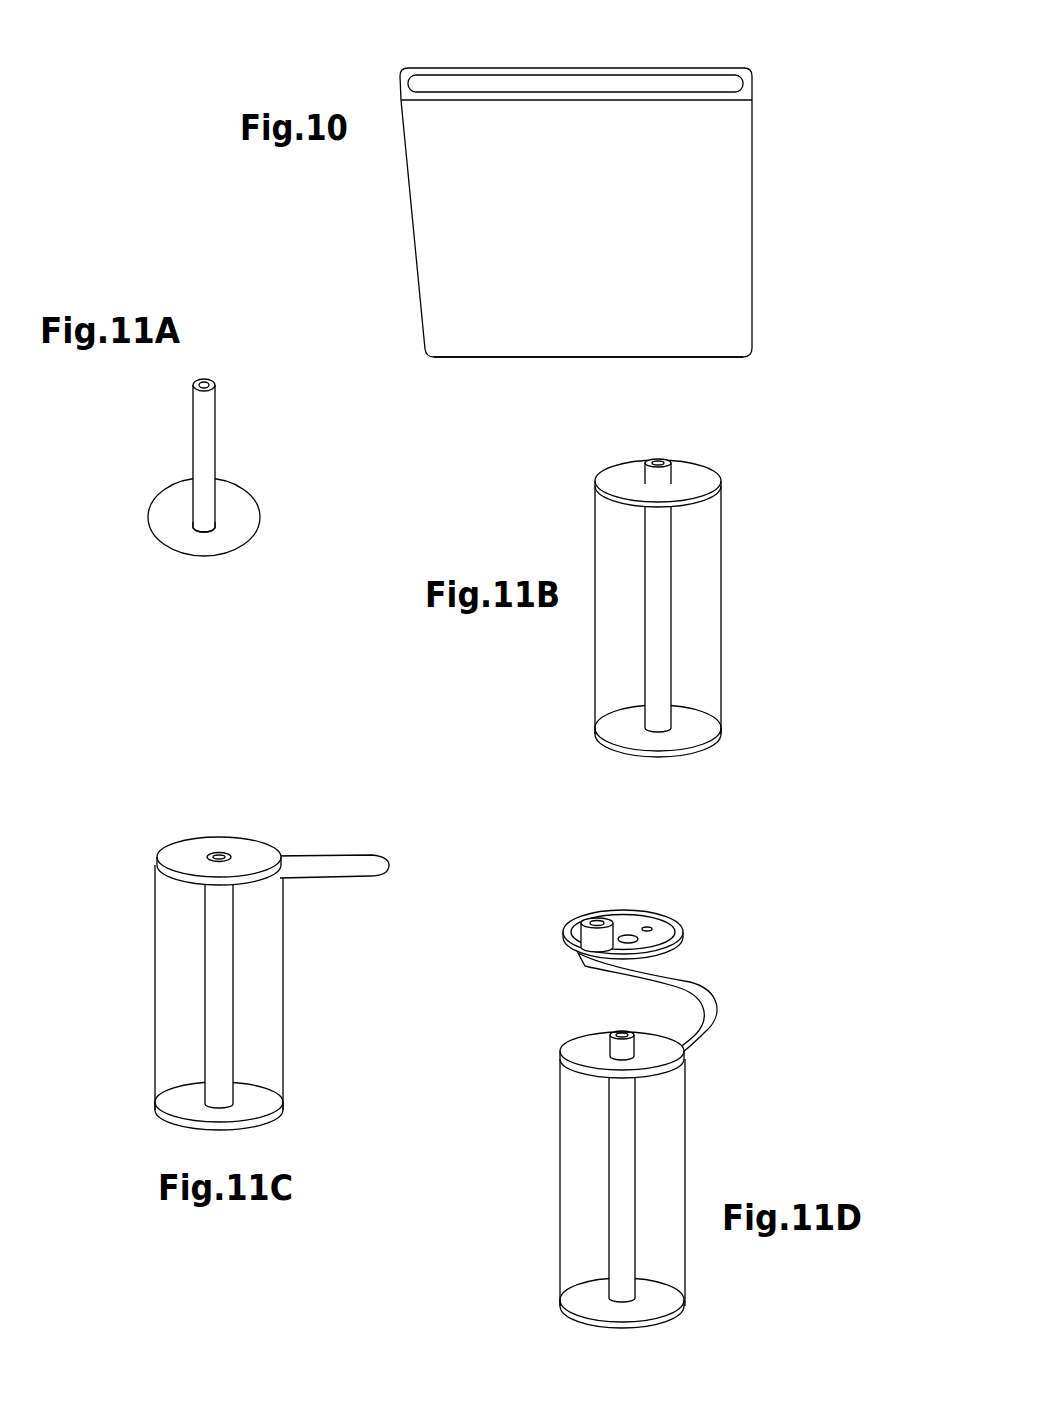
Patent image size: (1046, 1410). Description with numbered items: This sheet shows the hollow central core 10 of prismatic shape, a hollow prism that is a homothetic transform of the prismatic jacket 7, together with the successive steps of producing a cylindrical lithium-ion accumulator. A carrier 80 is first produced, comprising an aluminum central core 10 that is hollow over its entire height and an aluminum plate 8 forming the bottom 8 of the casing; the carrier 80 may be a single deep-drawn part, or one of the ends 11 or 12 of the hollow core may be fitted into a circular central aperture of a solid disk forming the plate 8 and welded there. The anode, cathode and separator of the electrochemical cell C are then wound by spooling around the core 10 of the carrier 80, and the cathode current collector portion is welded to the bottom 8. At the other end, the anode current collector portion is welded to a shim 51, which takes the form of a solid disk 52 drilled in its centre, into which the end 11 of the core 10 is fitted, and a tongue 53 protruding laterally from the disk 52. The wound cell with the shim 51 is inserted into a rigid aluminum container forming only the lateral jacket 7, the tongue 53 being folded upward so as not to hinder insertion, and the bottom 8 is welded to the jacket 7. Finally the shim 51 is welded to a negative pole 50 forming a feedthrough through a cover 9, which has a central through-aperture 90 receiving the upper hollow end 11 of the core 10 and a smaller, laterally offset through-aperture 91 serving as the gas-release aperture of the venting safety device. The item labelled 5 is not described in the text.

In FIG. 11C, the cartridge assembly 5 is at (252, 927).
In FIG. 11D, the lateral jacket 7 is at (667, 1118).
In FIG. 11A, the plate forming the bottom 8 is at (203, 543).
In FIG. 11B, the plate forming the bottom 8 is at (632, 722).
In FIG. 11C, the plate forming the bottom 8 is at (184, 1097).
In FIG. 11D, the plate forming the bottom 8 is at (585, 1298).
In FIG. 11D, the cover 9 is at (660, 925).
In FIG. 10, the hollow central core 10 is at (735, 160).
In FIG. 11A, the hollow central core 10 is at (205, 433).
In FIG. 11B, the hollow central core 10 is at (657, 534).
In FIG. 11C, the hollow central core 10 is at (215, 965).
In FIG. 11D, the hollow central core 10 is at (620, 1168).
In FIG. 10, the end of the hollow core 11 is at (696, 84).
In FIG. 11A, the end of the hollow core 11 is at (232, 361).
In FIG. 11B, the end of the hollow core 11 is at (672, 467).
In FIG. 11C, the end of the hollow core 11 is at (218, 853).
In FIG. 11D, the end of the hollow core 11 is at (613, 1034).
In FIG. 10, the end of the hollow core 12 is at (495, 358).
In FIG. 11A, the end of the hollow core 12 is at (203, 512).
In FIG. 11D, the negative pole 50 is at (568, 930).
In FIG. 11D, the shim 51 is at (668, 1084).
In FIG. 11C, the solid disk 52 is at (178, 855).
In FIG. 11D, the solid disk 52 is at (578, 1053).
In FIG. 11C, the tongue 53 is at (304, 865).
In FIG. 11D, the tongue 53 is at (712, 1004).
In FIG. 11A, the carrier 80 is at (221, 477).
In FIG. 11D, the central through-aperture 90 is at (618, 912).
In FIG. 11D, the through-aperture 91 is at (647, 920).
In FIG. 11B, the electrochemical cell C is at (708, 590).
In FIG. 11C, the electrochemical cell C is at (267, 950).